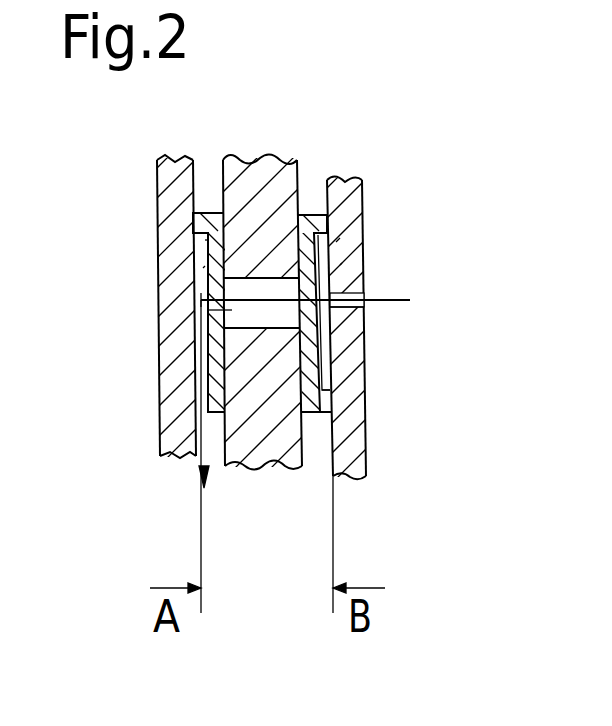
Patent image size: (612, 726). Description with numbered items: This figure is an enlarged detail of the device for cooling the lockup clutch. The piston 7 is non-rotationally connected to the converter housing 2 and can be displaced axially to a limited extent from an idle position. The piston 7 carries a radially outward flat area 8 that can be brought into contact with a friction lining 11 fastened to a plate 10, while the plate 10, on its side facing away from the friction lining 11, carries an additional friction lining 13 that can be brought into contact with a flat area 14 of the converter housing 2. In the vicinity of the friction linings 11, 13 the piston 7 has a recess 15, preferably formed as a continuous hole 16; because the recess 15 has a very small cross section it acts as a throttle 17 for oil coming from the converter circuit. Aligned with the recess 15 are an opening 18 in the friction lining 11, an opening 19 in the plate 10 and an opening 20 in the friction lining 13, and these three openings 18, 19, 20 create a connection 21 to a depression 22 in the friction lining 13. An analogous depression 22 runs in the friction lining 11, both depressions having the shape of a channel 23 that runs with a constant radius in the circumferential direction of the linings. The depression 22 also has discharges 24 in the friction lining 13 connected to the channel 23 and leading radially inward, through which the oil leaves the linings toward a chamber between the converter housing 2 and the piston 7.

The converter housing 2 is at (165, 176).
The piston 7 is at (350, 195).
The flat area 8 is at (336, 242).
The plate 10 is at (243, 182).
The friction lining 11 is at (307, 213).
The additional friction lining 13 is at (210, 213).
The flat area 14 is at (205, 240).
The recess 15 is at (352, 290).
The continuous hole 16 is at (363, 305).
The throttle 17 is at (340, 312).
The opening 18 is at (335, 390).
The opening 19 is at (208, 311).
The opening 20 is at (215, 297).
The connection 21 is at (265, 310).
The depression 22 is at (200, 371).
The channel 23 is at (340, 265).
The discharges 24 is at (215, 465).